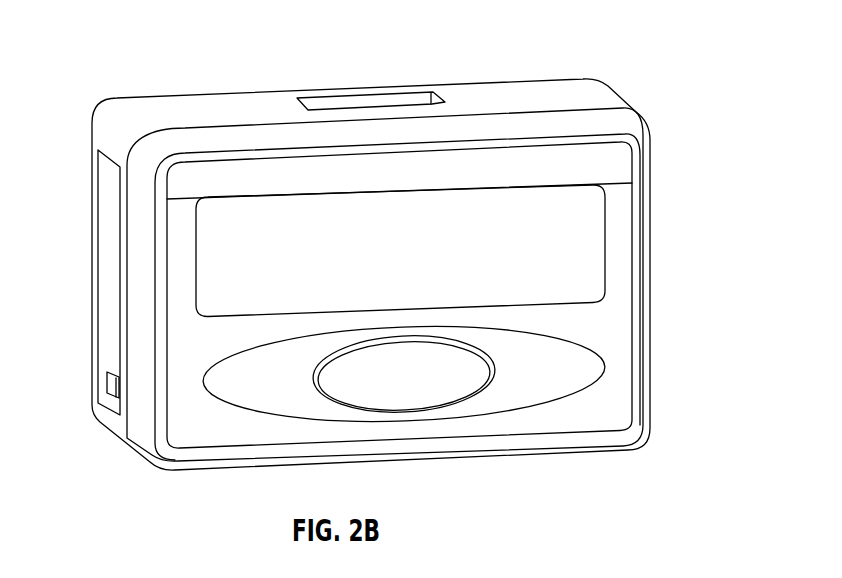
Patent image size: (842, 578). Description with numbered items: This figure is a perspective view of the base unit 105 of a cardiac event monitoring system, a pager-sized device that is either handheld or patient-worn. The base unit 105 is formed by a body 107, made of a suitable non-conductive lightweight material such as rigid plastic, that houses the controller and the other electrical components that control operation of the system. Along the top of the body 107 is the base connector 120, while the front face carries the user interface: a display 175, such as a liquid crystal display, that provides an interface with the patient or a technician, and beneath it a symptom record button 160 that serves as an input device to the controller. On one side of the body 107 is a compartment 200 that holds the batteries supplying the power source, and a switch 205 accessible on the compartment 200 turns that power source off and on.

The base unit 105 is at (666, 46).
The body 107 is at (177, 109).
The base connector 120 is at (377, 94).
The symptom record button 160 is at (430, 395).
The display 175 is at (573, 243).
The compartment 200 is at (108, 225).
The switch 205 is at (115, 386).